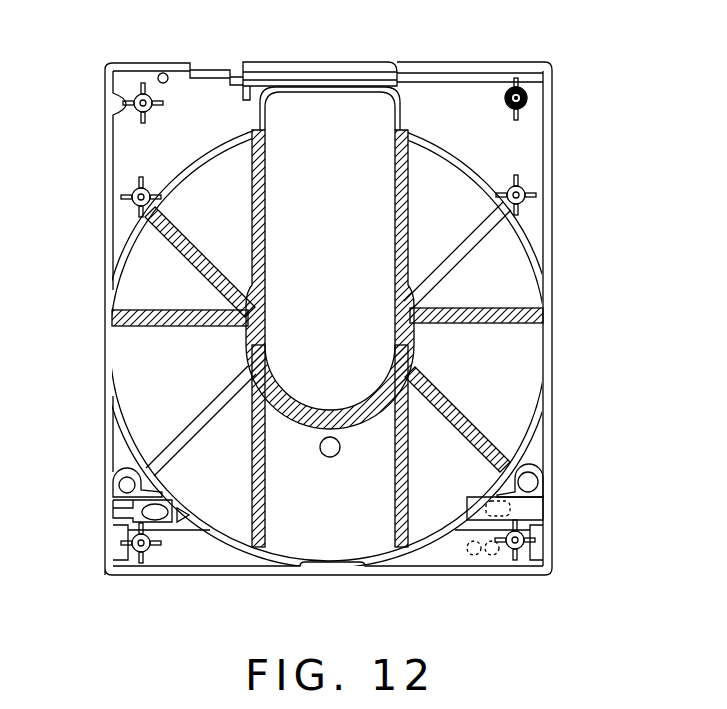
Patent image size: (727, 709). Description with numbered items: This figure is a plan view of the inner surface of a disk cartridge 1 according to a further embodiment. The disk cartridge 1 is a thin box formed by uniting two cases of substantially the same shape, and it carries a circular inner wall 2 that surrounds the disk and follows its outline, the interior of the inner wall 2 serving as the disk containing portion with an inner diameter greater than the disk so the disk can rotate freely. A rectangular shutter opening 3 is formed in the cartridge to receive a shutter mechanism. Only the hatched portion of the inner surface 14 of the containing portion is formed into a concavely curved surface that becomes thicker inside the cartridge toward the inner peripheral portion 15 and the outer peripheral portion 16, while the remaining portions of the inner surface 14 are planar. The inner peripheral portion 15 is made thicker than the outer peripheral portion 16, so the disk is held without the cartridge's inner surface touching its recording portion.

The disk cartridge 1 is at (520, 147).
The circular inner wall 2 is at (540, 242).
The shutter opening 3 is at (356, 110).
The inner surface 14 is at (145, 361).
The inner peripheral portion 15 is at (357, 428).
The outer peripheral portion 16 is at (550, 315).